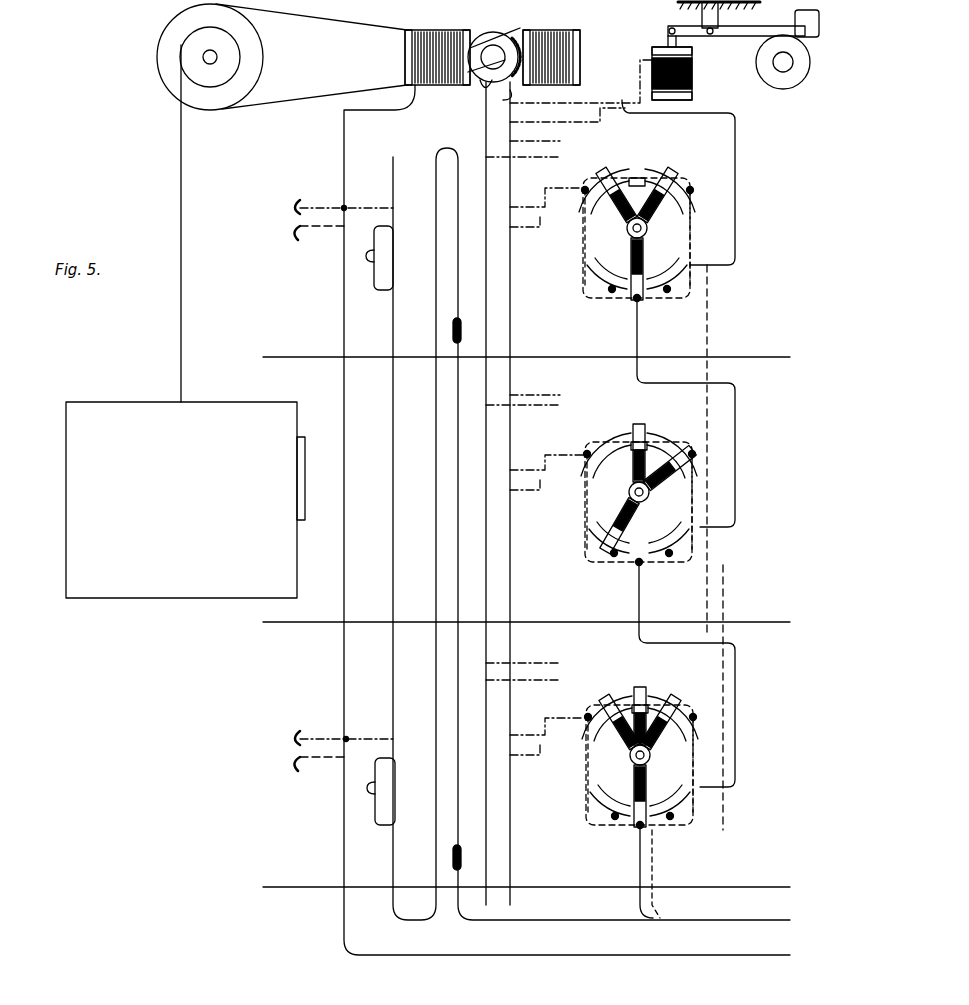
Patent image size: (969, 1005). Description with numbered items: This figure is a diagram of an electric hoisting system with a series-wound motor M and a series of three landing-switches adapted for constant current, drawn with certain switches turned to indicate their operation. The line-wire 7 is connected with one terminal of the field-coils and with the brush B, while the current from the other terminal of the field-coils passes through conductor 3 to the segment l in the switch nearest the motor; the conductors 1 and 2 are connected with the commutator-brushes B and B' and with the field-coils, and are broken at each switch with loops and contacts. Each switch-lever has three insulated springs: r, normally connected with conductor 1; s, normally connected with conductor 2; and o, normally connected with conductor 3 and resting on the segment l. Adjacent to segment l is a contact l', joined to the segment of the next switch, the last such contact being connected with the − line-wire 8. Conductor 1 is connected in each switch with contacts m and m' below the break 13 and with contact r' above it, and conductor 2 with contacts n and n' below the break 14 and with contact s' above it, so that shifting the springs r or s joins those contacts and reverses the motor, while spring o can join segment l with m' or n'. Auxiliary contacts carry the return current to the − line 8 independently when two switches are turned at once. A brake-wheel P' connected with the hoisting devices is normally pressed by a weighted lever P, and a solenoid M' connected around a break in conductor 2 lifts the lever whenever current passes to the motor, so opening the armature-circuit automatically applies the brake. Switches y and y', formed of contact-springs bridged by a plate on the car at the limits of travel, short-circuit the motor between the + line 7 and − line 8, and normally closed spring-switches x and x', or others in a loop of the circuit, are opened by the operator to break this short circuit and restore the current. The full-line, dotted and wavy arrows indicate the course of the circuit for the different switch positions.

The line-wire 7 is at (352, 868).
The line-wire 8 is at (400, 868).
The conductor 1 is at (486, 818).
The conductor 2 is at (516, 818).
The conductor 3 is at (735, 198).
The break 13 is at (492, 409).
The break 14 is at (520, 208).
The commutator-brush B is at (494, 40).
The commutator-brush B' is at (495, 95).
The motor M is at (492, 45).
The solenoid M' is at (687, 73).
The pawl lever P is at (743, 18).
The brake-wheel P' is at (783, 73).
The transmitter T is at (181, 500).
The switch y' is at (332, 219).
The switch y is at (333, 749).
The spring-switch x is at (374, 791).
The spring-switch x' is at (373, 258).
The segment l is at (638, 497).
The contact l' is at (627, 577).
The spring s is at (616, 411).
The contact s' is at (594, 425).
The spring r is at (692, 425).
The contact r' is at (682, 411).
The contact n is at (591, 483).
The contact n' is at (590, 567).
The contact m is at (696, 338).
The contact m' is at (717, 692).
The spring o is at (656, 581).
The + line line 7 is at (719, 957).
The − line line 8 is at (717, 920).